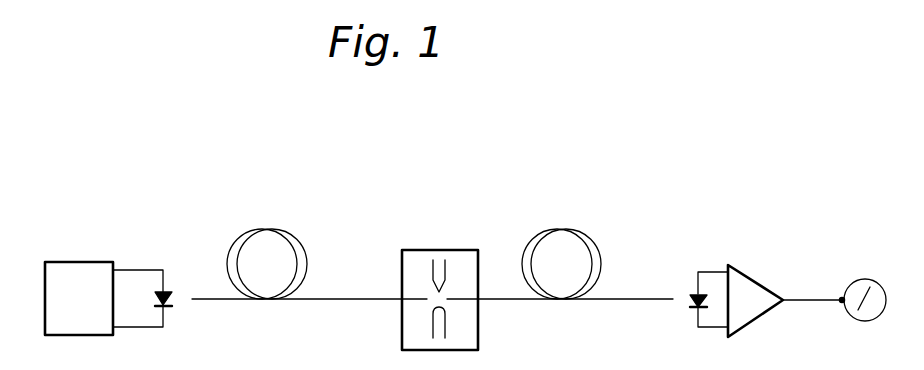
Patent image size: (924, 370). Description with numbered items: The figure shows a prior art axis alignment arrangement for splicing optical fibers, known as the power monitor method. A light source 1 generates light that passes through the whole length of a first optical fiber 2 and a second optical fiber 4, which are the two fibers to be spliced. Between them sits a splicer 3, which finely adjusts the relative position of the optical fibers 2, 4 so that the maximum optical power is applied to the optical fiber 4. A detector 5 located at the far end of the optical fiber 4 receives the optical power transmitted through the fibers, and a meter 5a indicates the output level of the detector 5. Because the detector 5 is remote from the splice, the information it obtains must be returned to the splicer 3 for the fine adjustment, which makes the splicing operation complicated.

The light source 1 is at (104, 262).
The optical fiber 2 is at (270, 229).
The splicer 3 is at (439, 250).
The optical fiber 4 is at (561, 229).
The detector 5 is at (750, 276).
The meter 5a is at (872, 282).